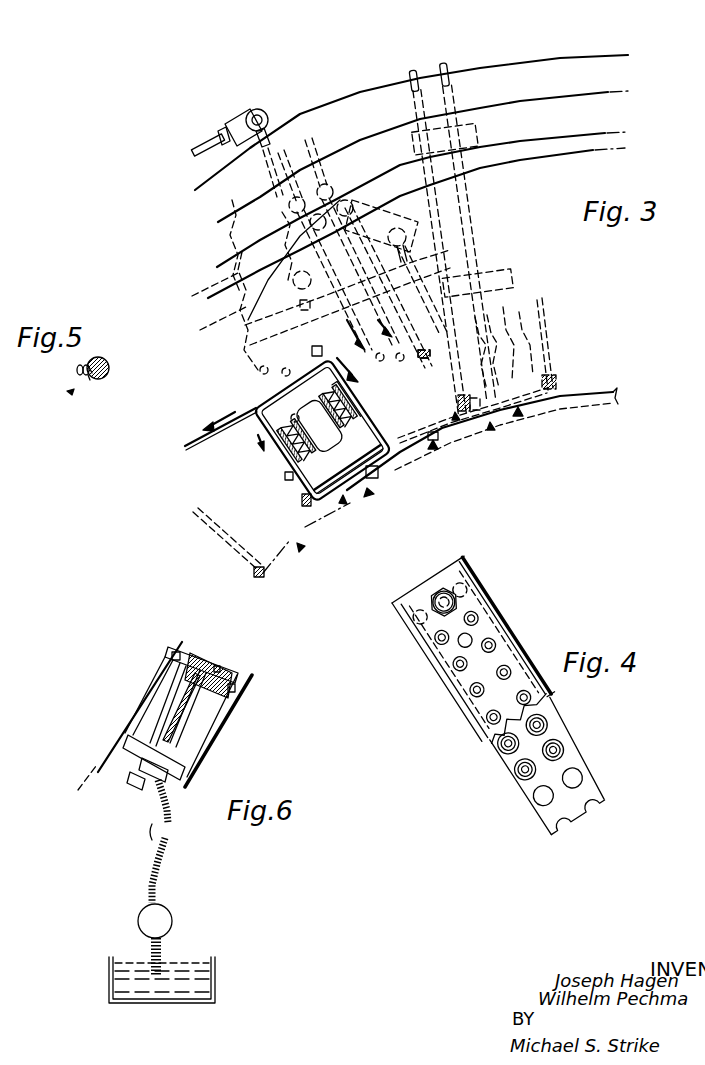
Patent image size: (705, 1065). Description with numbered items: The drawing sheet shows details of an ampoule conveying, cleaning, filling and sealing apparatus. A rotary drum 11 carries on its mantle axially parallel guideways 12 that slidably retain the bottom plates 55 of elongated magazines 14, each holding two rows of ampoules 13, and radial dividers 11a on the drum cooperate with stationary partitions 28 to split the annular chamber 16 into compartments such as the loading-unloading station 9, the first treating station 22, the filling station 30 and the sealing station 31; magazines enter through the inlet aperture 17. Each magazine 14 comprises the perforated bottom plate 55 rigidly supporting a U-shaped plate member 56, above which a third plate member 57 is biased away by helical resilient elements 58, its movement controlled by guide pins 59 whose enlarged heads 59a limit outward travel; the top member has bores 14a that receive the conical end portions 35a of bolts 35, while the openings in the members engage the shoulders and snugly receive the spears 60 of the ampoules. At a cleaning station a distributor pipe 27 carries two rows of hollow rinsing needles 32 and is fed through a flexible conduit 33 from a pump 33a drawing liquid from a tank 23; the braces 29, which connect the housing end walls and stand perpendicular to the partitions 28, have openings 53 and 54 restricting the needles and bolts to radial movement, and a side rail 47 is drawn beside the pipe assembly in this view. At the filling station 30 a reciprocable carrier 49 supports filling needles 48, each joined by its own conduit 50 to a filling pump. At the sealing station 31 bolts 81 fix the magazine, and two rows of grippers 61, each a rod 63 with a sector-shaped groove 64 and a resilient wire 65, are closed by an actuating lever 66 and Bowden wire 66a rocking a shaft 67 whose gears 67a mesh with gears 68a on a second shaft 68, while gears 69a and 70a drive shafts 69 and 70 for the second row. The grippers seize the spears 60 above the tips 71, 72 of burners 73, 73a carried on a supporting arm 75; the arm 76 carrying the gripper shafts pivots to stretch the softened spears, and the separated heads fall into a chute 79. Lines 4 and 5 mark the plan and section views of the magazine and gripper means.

In FIG. 3, the section line 4— 4 is at (345, 362).
In FIG. 3, the section line 5— 5 is at (372, 283).
In FIG. 3, the loading-unloading station 9 is at (369, 491).
In FIG. 3, the drum 11 is at (590, 400).
In FIG. 3, the dividers 11a is at (207, 510).
In FIG. 3, the guideways 12 is at (304, 504).
In FIG. 3, the ampoules 13 is at (332, 472).
In FIG. 4, the ampoules 13 is at (517, 773).
In FIG. 3, the magazine 14 is at (345, 503).
In FIG. 4, the magazine 14 is at (505, 630).
In FIG. 4, the bores 14a is at (456, 648).
In FIG. 3, the annular chamber 16 is at (627, 293).
In FIG. 3, the inlet aperture 17 is at (266, 394).
In FIG. 3, the treating station 22 is at (301, 548).
In FIG. 6, the tank 23 is at (205, 983).
In FIG. 6, the distributor pipe 27 is at (130, 753).
In FIG. 6, the partitions 28 is at (140, 708).
In FIG. 3, the braces 29 is at (513, 267).
In FIG. 6, the braces 29 is at (195, 648).
In FIG. 3, the filling station 30 is at (518, 413).
In FIG. 3, the sealing station 31 is at (434, 447).
In FIG. 6, the rinsing needles 32 is at (170, 697).
In FIG. 6, the conduit 33 is at (172, 823).
In FIG. 6, the pump 33a is at (172, 918).
In FIG. 6, the bolts 35 is at (138, 792).
In FIG. 6, the conical end portions 35a is at (220, 670).
In FIG. 6, the rail 47 is at (226, 724).
In FIG. 3, the filling needles 48 is at (467, 249).
In FIG. 3, the reciprocable carrier 49 is at (466, 133).
In FIG. 3, the conduit 50 is at (429, 60).
In FIG. 6, the openings 53 is at (209, 655).
In FIG. 6, the openings 54 is at (214, 668).
In FIG. 3, the bottom plate 55 is at (362, 473).
In FIG. 4, the bottom plate 55 is at (547, 812).
In FIG. 3, the U-shaped plate member 56 is at (288, 477).
In FIG. 4, the U-shaped plate member 56 is at (553, 733).
In FIG. 3, the third plate member 57 is at (316, 352).
In FIG. 4, the third plate member 57 is at (437, 647).
In FIG. 3, the helical resilient elements 58 is at (294, 422).
In FIG. 4, the helical resilient elements 58 is at (466, 590).
In FIG. 3, the guide pins 59 is at (263, 452).
In FIG. 4, the guide pins 59 is at (443, 568).
In FIG. 3, the enlarged heads 59a is at (284, 368).
In FIG. 4, the enlarged heads 59a is at (430, 600).
In FIG. 3, the spear 60 is at (265, 367).
In FIG. 4, the spear 60 is at (476, 618).
In FIG. 5, the spear 60 is at (88, 380).
In FIG. 3, the grippers 61 is at (405, 277).
In FIG. 5, the grippers 61 is at (72, 392).
In FIG. 3, the rod 63 is at (387, 349).
In FIG. 5, the rod 63 is at (107, 376).
In FIG. 5, the sector-shaped groove 64 is at (98, 357).
In FIG. 3, the resilient wire 65 is at (302, 306).
In FIG. 5, the resilient wire 65 is at (77, 370).
In FIG. 3, the actuating lever 66 is at (270, 138).
In FIG. 3, the Bowden wire 66a is at (208, 142).
In FIG. 3, the shaft 67 is at (290, 212).
In FIG. 3, the gears 67a is at (300, 192).
In FIG. 3, the second shaft 68 is at (293, 285).
In FIG. 3, the gears 68a is at (218, 303).
In FIG. 3, the shaft 69 is at (330, 197).
In FIG. 3, the gears 69a is at (333, 170).
In FIG. 3, the shaft 70 is at (385, 203).
In FIG. 3, the gears 70a is at (352, 190).
In FIG. 3, the tips 71 is at (422, 354).
In FIG. 3, the tips 72 is at (380, 375).
In FIG. 3, the burners 73 is at (413, 283).
In FIG. 3, the burners 73a is at (330, 334).
In FIG. 3, the supporting arm 75 is at (226, 313).
In FIG. 3, the arm 76 is at (232, 235).
In FIG. 3, the chute 79 is at (226, 429).
In FIG. 3, the bolts 81 is at (290, 140).